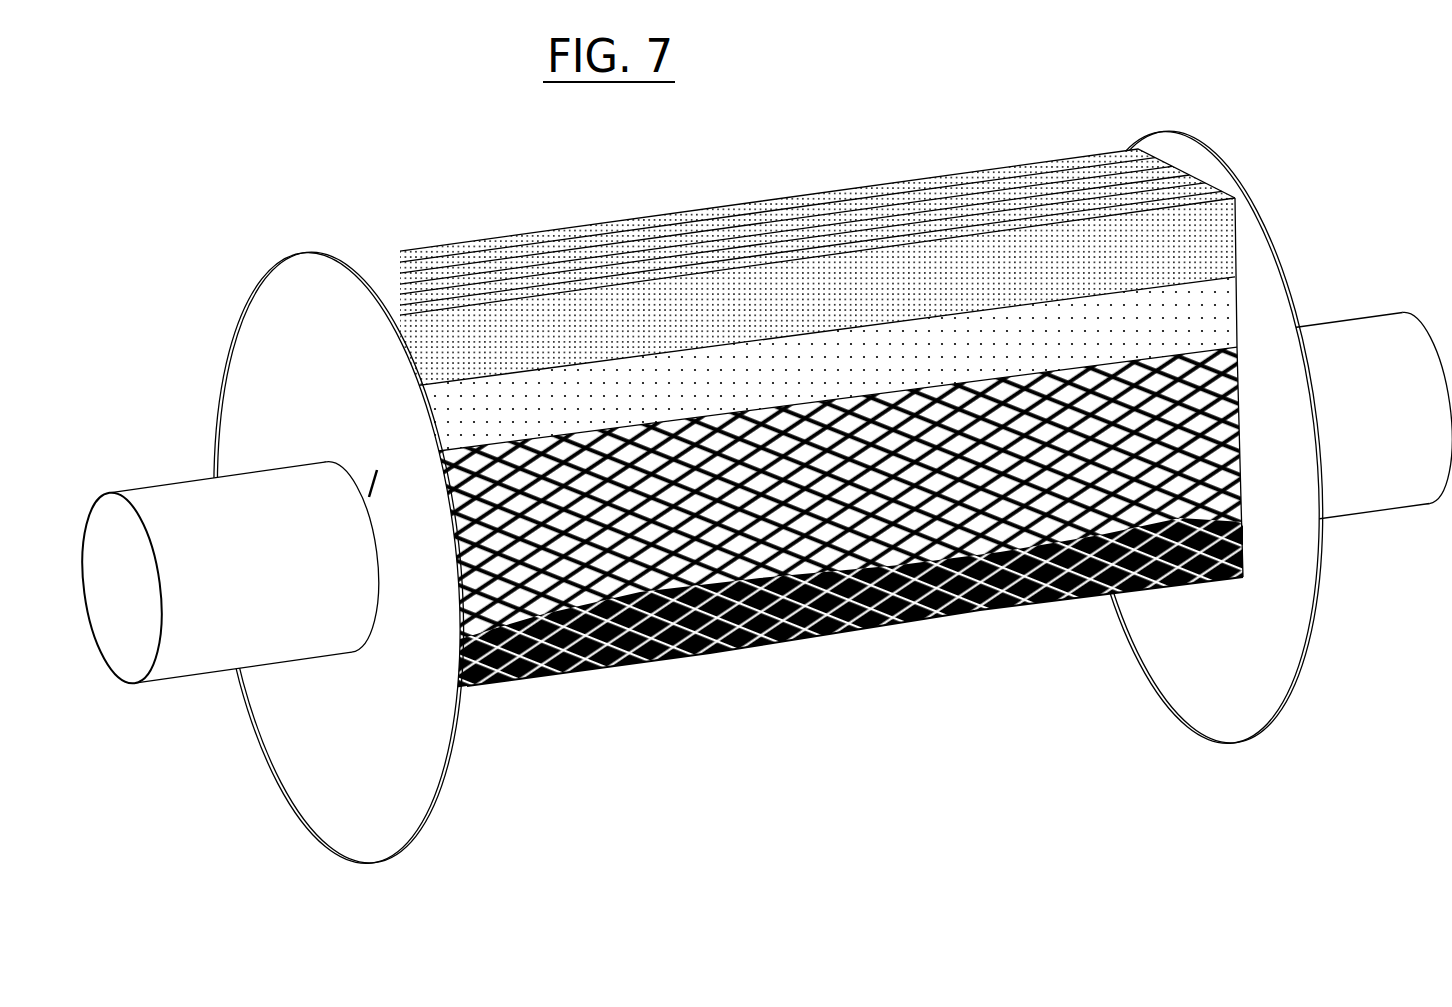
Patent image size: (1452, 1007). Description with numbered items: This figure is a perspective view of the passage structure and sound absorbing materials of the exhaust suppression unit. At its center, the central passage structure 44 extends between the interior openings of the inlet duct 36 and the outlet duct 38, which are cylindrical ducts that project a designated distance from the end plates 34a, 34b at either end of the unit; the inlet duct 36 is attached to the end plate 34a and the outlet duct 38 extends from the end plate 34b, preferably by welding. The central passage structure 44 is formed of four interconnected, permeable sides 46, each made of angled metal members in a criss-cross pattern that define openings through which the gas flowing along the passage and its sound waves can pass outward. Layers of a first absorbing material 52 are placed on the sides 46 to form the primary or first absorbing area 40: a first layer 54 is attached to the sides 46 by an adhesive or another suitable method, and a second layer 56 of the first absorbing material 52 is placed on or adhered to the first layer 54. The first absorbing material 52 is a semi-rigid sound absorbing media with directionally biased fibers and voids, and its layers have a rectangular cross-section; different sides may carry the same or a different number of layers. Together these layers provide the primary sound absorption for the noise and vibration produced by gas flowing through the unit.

The first absorbing area 40 is at (762, 496).
The inlet duct 36 is at (1364, 377).
The outlet duct 38 is at (230, 631).
The end plate 34a is at (1227, 437).
The end plate 34b is at (359, 557).
The first absorbing material 52 is at (817, 216).
The second layer 56 is at (851, 254).
The first layer 54 is at (867, 323).
The central passage structure 44 is at (831, 554).
The permeable sides 46 is at (841, 604).